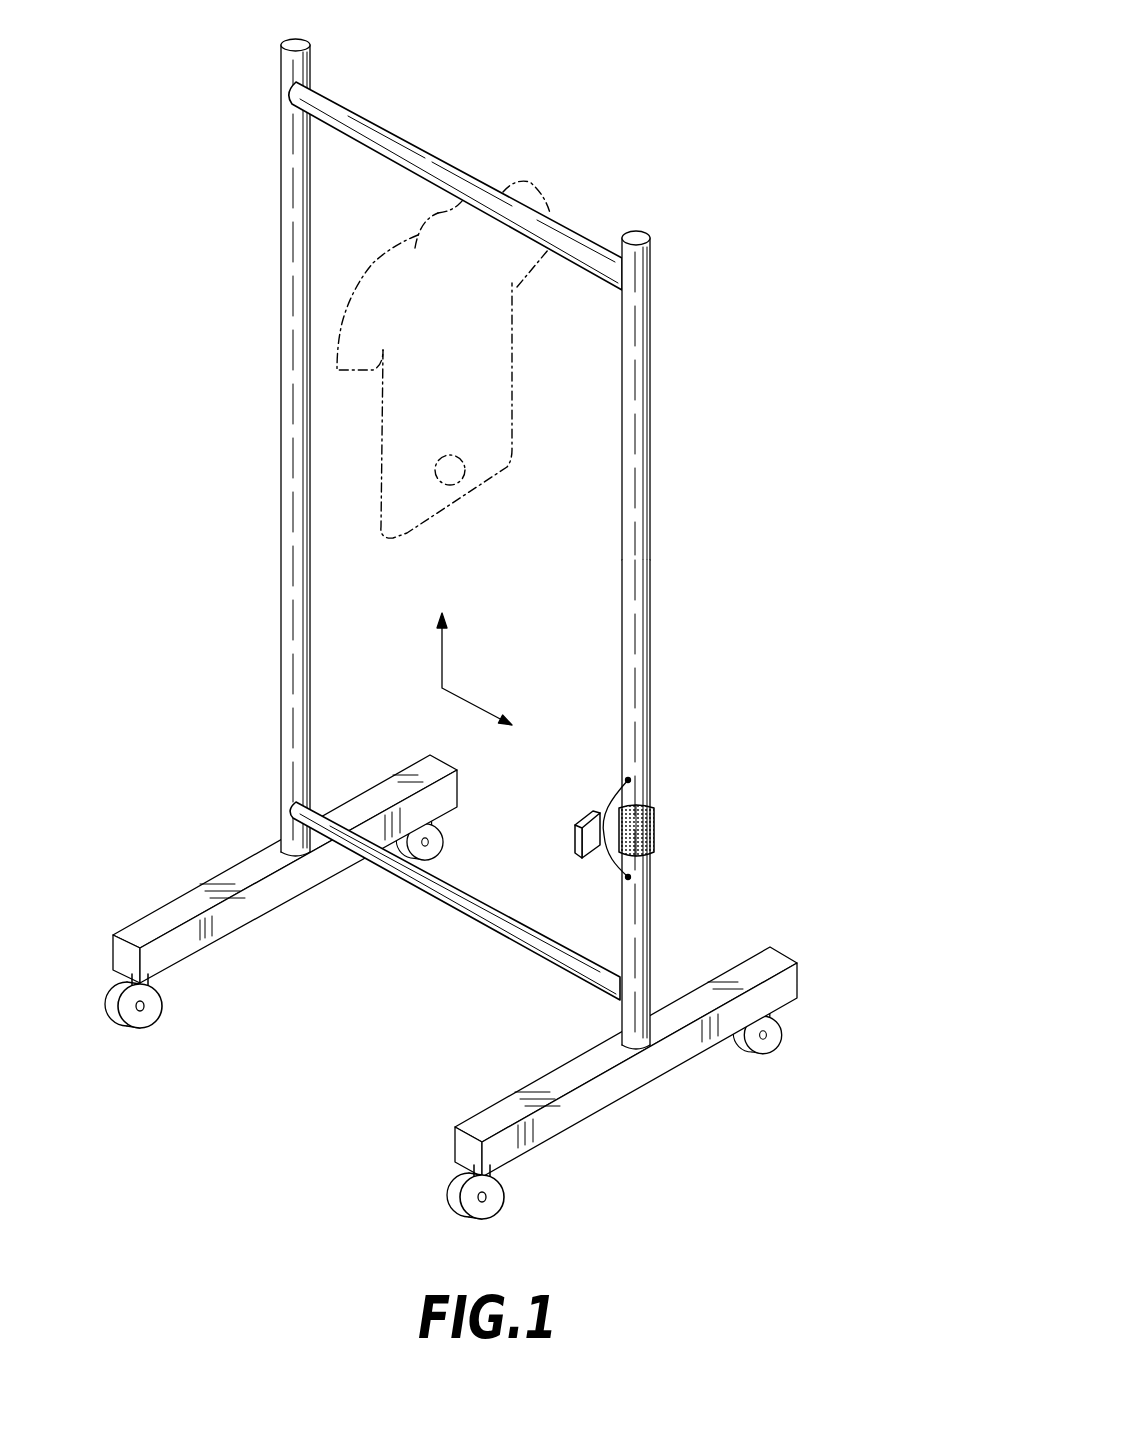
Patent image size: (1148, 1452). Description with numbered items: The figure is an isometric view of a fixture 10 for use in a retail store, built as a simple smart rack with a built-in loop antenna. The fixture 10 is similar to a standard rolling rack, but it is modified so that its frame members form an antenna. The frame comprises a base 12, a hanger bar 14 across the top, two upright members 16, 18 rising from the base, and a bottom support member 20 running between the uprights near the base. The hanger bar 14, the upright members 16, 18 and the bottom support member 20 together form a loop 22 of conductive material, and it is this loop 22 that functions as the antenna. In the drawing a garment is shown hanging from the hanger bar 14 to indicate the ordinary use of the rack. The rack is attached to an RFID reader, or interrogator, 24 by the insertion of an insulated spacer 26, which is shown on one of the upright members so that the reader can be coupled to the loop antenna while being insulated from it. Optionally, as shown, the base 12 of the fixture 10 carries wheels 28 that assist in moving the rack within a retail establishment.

The fixture 10 is at (504, 612).
The base 12 is at (730, 973).
The hanger bar 14 is at (572, 230).
The upright member 16 is at (652, 392).
The upright member 18 is at (280, 320).
The bottom support member 20 is at (465, 915).
The loop 22 is at (652, 596).
The RFID reader 24 is at (585, 815).
The insulated spacer 26 is at (655, 822).
The wheels 28 is at (447, 833).